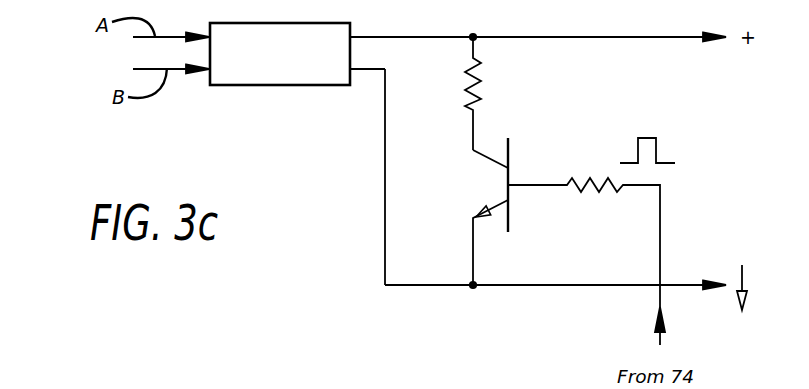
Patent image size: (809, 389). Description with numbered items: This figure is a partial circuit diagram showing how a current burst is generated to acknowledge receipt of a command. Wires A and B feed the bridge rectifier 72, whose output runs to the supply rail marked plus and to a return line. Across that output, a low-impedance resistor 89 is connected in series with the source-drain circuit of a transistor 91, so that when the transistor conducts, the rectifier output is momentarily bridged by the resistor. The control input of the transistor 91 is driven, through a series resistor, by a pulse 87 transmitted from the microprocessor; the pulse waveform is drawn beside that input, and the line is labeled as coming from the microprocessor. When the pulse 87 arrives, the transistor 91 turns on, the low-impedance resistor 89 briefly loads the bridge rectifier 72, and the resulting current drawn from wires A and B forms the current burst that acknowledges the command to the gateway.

The bridge rectifier 72 is at (293, 86).
The low-impedance resistor 89 is at (478, 88).
The transistor 91 is at (477, 180).
The pulse 87 is at (653, 151).